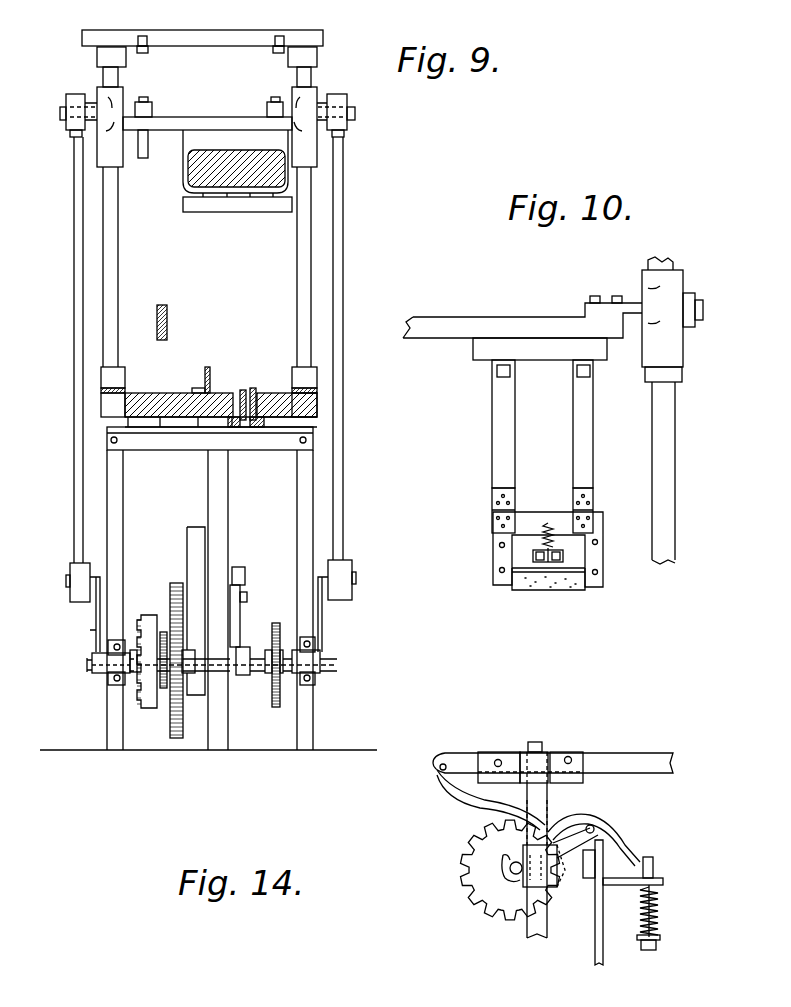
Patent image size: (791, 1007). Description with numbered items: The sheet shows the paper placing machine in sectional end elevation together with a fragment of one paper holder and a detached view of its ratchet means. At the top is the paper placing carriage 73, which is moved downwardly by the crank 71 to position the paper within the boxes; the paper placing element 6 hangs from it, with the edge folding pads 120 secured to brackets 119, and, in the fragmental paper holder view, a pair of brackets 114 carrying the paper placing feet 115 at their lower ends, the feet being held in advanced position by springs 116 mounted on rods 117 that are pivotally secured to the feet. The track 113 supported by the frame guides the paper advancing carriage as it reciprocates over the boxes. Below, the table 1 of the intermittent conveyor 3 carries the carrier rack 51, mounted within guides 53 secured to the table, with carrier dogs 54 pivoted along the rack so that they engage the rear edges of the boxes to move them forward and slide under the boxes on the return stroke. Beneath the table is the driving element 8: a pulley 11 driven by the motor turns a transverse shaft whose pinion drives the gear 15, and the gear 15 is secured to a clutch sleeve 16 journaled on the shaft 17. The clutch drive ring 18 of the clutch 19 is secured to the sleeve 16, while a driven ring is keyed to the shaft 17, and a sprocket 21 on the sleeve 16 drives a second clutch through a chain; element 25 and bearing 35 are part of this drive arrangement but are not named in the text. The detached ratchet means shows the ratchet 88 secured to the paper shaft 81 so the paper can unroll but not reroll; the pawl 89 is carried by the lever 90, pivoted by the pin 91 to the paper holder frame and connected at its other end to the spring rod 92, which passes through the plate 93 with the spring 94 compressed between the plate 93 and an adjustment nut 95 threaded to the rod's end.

In FIG. 9, the table 1 is at (146, 402).
In FIG. 9, the intermittent conveyor 3 is at (243, 392).
In FIG. 9, the paper placing element 6 is at (192, 170).
In FIG. 9, the driving element 8 is at (283, 721).
In FIG. 9, the pulley 11 is at (205, 537).
In FIG. 9, the gear 15 is at (176, 583).
In FIG. 9, the clutch sleeve 16 is at (195, 680).
In FIG. 9, the shaft 17 is at (225, 670).
In FIG. 9, the clutch drive ring 18 is at (155, 708).
In FIG. 9, the clutch 19 is at (154, 608).
In FIG. 9, the sprocket 21 is at (163, 690).
In FIG. 9, the gear 25 is at (276, 623).
In FIG. 9, the bearing 35 is at (140, 625).
In FIG. 9, the carrier rack 51 is at (254, 396).
In FIG. 9, the guides 53 is at (258, 428).
In FIG. 9, the carrier dogs 54 is at (209, 376).
In FIG. 9, the crank 71 is at (90, 622).
In FIG. 10, the crank 71 is at (675, 482).
In FIG. 9, the paper placing carriage 73 is at (222, 117).
In FIG. 14, the paper shaft 81 is at (512, 878).
In FIG. 14, the ratchet 88 is at (480, 872).
In FIG. 14, the pawl 89 is at (557, 825).
In FIG. 14, the lever 90 is at (478, 798).
In FIG. 14, the pin 91 is at (446, 764).
In FIG. 14, the spring rod 92 is at (655, 878).
In FIG. 14, the plate 93 is at (615, 887).
In FIG. 14, the spring 94 is at (658, 905).
In FIG. 14, the adjustment nut 95 is at (648, 950).
In FIG. 9, the track 113 is at (168, 322).
In FIG. 10, the brackets 114 is at (580, 416).
In FIG. 10, the paper placing feet 115 is at (517, 556).
In FIG. 10, the springs 116 is at (543, 540).
In FIG. 10, the rods 117 is at (548, 522).
In FIG. 9, the brackets 119 is at (288, 178).
In FIG. 9, the edge folding pads 120 is at (233, 208).